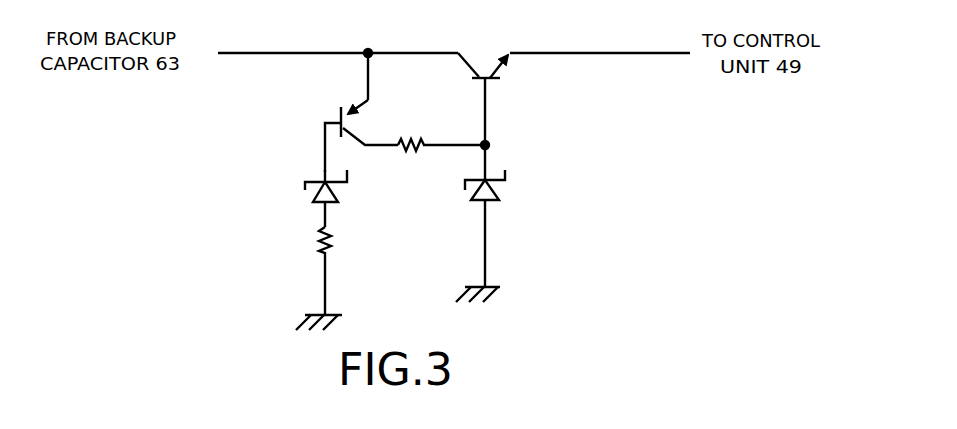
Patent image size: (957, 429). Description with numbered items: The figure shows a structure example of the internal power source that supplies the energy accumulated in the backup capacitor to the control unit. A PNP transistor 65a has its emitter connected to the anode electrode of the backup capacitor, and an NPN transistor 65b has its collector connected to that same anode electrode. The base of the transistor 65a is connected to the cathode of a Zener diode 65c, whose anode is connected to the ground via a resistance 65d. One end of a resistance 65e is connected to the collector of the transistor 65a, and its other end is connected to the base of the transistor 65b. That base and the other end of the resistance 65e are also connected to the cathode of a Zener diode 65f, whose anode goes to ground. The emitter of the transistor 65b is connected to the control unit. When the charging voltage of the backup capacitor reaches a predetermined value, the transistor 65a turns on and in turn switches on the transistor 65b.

The PNP transistor 65a is at (337, 111).
The NPN transistor 65b is at (500, 79).
The Zener diode 65c is at (307, 190).
The resistance 65d is at (333, 236).
The resistance 65e is at (410, 137).
The Zener diode 65f is at (500, 197).